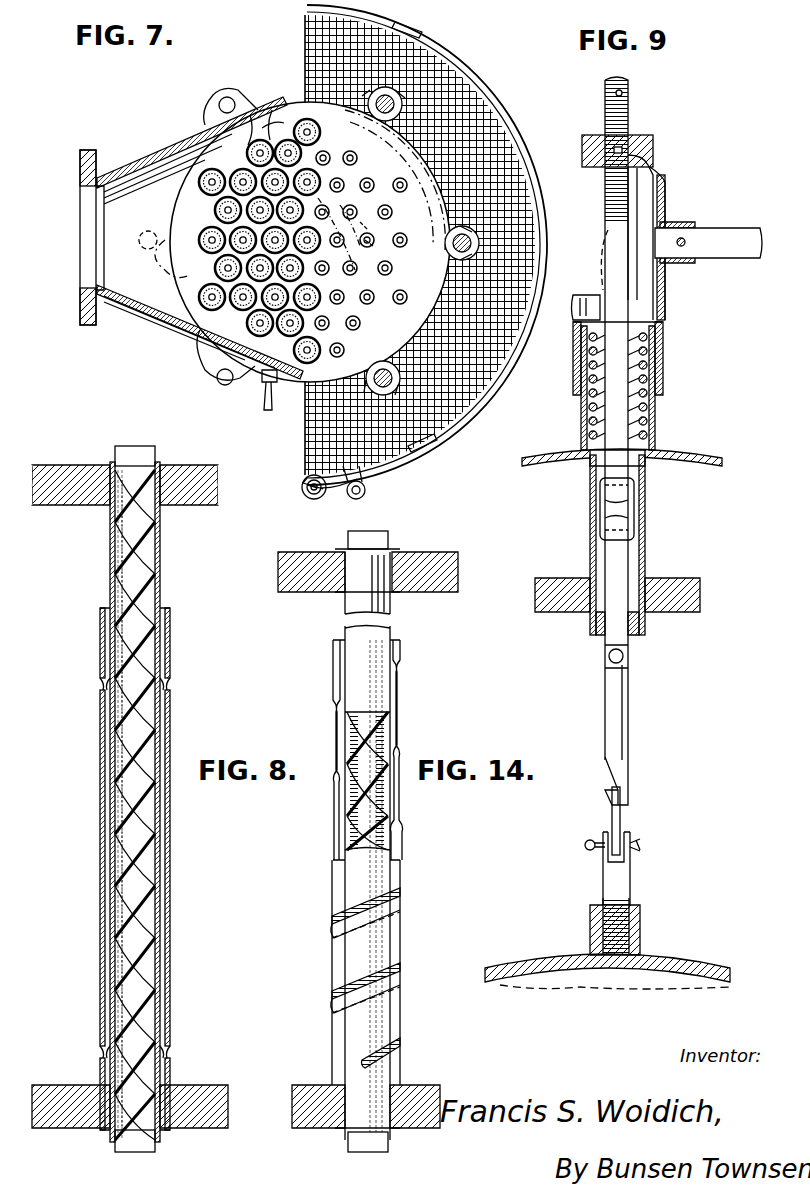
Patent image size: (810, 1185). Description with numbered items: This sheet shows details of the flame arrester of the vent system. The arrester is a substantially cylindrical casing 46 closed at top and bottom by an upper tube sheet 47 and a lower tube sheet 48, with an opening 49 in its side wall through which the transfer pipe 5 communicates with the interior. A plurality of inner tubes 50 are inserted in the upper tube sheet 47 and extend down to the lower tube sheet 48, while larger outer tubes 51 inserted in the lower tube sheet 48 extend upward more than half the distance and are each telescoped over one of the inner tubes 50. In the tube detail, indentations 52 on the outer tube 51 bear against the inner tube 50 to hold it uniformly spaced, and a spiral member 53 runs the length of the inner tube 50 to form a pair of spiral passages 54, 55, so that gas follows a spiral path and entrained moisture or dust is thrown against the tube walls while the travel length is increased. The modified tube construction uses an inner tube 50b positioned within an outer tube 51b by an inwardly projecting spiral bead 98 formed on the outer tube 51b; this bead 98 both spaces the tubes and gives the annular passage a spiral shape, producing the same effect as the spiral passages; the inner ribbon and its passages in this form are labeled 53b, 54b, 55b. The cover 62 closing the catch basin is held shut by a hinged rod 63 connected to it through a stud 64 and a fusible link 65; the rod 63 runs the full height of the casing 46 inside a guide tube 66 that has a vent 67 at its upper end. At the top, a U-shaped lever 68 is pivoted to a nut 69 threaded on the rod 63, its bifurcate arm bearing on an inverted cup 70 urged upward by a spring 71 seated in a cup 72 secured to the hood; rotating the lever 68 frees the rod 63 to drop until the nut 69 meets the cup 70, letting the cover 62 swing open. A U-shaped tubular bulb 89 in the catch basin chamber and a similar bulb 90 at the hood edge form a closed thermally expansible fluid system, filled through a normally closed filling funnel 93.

In FIG. 7, the transfer pipe 5 is at (150, 312).
In FIG. 7, the casing 46 is at (296, 388).
In FIG. 7, the upper tube sheet 47 is at (324, 241).
In FIG. 8, the upper tube sheet 47 is at (50, 465).
In FIG. 8, the lower tube sheet 48 is at (50, 1085).
In FIG. 7, the opening 49 is at (192, 144).
In FIG. 7, the inner tube 50 is at (262, 140).
In FIG. 8, the inner tube 50 is at (160, 560).
In FIG. 7, the outer tube 51 is at (278, 128).
In FIG. 8, the outer tube 51 is at (170, 626).
In FIG. 8, the indentations 52 is at (100, 684).
In FIG. 8, the spiral member 53 is at (150, 876).
In FIG. 7, the spiral passage 54 is at (472, 86).
In FIG. 8, the spiral passage 54 is at (150, 958).
In FIG. 8, the spiral passage 55 is at (150, 906).
In FIG. 9, the cover 62 is at (680, 958).
In FIG. 9, the hinged rod 63 is at (600, 640).
In FIG. 9, the stud 64 is at (605, 878).
In FIG. 9, the fusible link 65 is at (622, 824).
In FIG. 9, the tube 66 is at (648, 546).
In FIG. 9, the vent 67 is at (604, 506).
In FIG. 9, the U-shaped lever 68 is at (668, 198).
In FIG. 9, the nut 69 is at (586, 140).
In FIG. 9, the inverted cup 70 is at (666, 368).
In FIG. 9, the spring 71 is at (662, 414).
In FIG. 9, the cup 72 is at (660, 432).
In FIG. 7, the U-shaped tubular bulb 89 is at (355, 234).
In FIG. 7, the bulb 90 is at (388, 462).
In FIG. 7, the filling funnel 93 is at (354, 495).
In FIG. 14, the spiral bead 98 is at (395, 760).
In FIG. 14, the inner tube 50b is at (396, 806).
In FIG. 14, the outer tube 51b is at (398, 866).
In FIG. 14, the helical ribbon 53b is at (345, 812).
In FIG. 14, the spiral line 54b is at (388, 830).
In FIG. 14, the spiral core 55b is at (385, 852).